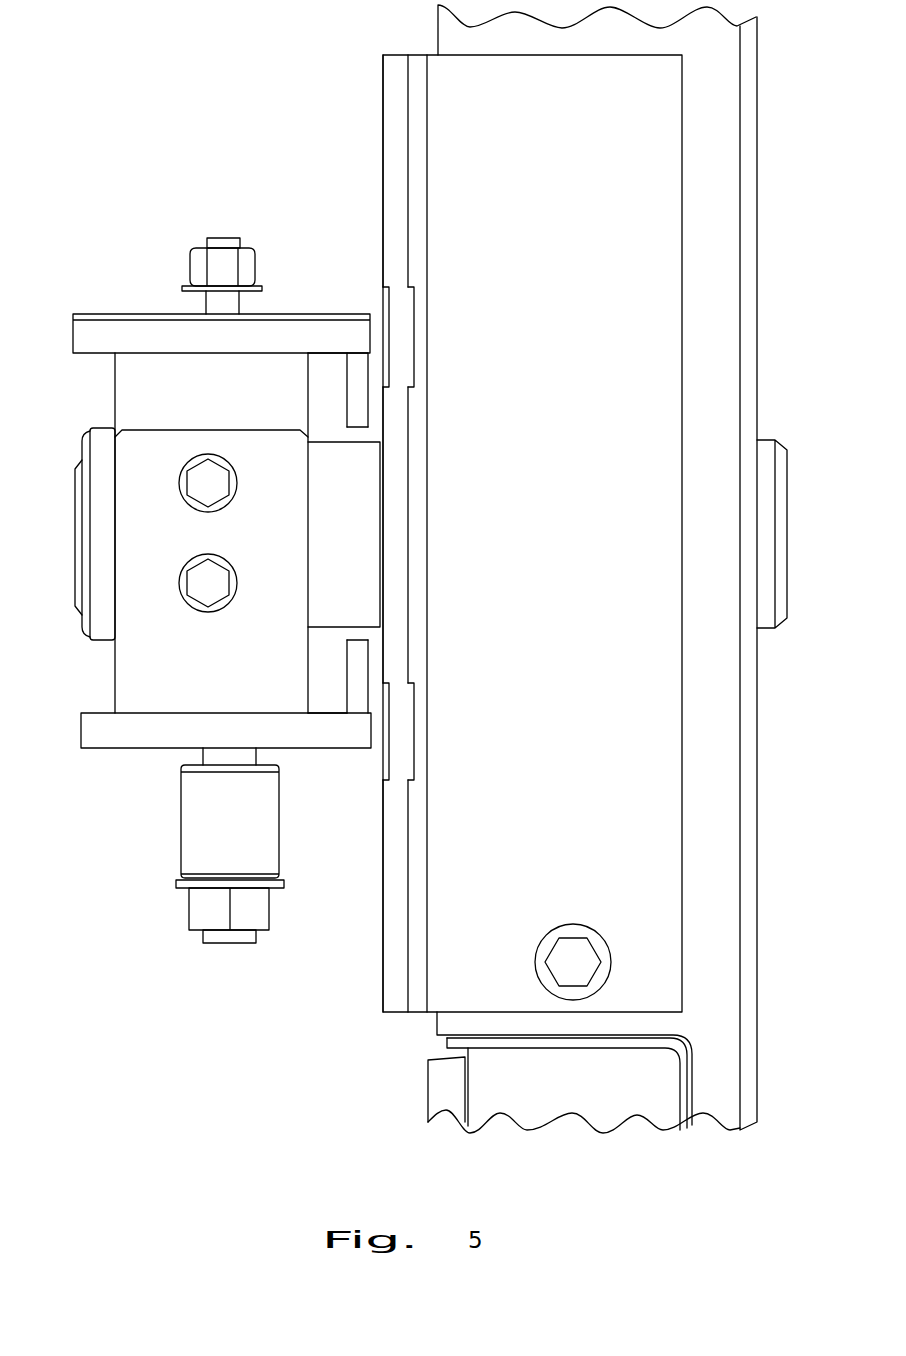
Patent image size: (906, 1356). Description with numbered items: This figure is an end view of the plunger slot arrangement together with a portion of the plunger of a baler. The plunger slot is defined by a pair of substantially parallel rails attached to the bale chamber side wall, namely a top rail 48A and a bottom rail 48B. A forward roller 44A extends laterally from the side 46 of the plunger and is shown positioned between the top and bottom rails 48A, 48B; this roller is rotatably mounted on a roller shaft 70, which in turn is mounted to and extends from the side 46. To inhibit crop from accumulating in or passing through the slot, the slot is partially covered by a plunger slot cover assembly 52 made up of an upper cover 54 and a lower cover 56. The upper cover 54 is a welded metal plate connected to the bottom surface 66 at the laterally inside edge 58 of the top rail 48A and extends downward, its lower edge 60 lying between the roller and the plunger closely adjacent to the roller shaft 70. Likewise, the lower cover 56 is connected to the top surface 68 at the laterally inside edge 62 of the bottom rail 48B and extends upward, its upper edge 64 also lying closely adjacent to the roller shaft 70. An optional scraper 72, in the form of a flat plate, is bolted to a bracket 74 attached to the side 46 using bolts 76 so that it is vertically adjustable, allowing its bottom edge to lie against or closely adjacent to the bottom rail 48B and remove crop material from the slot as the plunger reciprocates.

The forward roller 44A is at (113, 690).
The side 46 is at (427, 1090).
The top rail 48A is at (132, 313).
The bottom rail 48B is at (127, 750).
The plunger slot cover assembly 52 is at (375, 650).
The upper cover 54 is at (368, 375).
The lower cover 56 is at (368, 675).
The laterally inside edge 58 is at (366, 352).
The lower edge 60 is at (357, 427).
The laterally inside edge 62 is at (371, 712).
The upper edge 64 is at (358, 640).
The bottom surface 66 is at (331, 367).
The top surface 68 is at (331, 705).
The roller shaft 70 is at (368, 535).
The scraper 72 is at (148, 650).
The bracket 74 is at (132, 398).
The bolts 76 is at (197, 563).